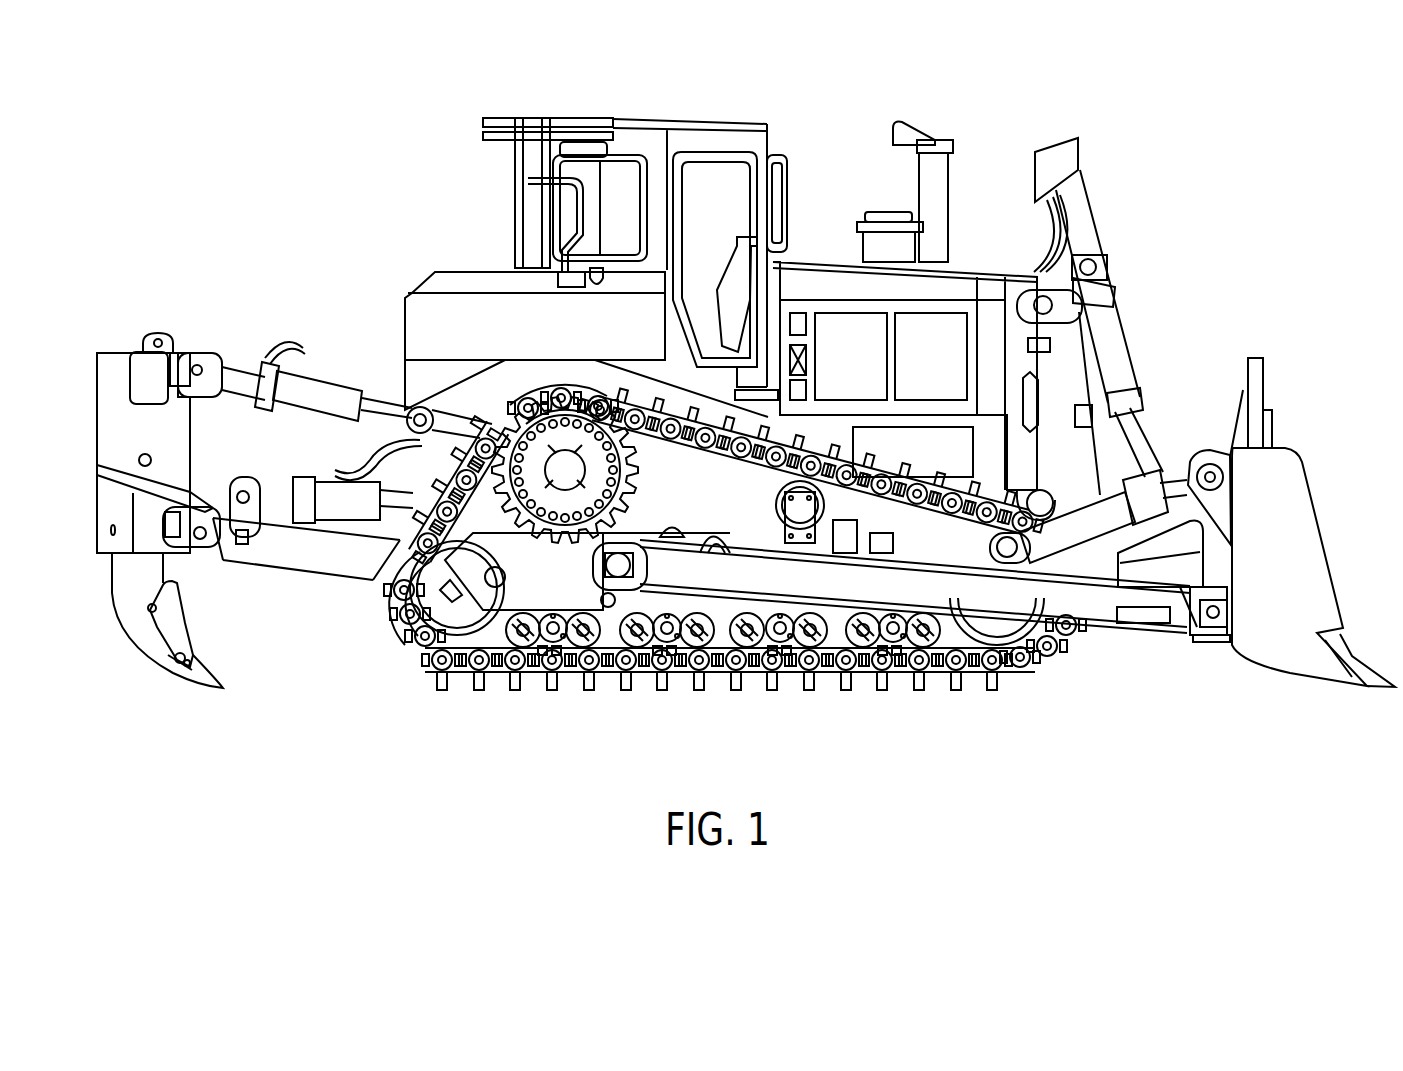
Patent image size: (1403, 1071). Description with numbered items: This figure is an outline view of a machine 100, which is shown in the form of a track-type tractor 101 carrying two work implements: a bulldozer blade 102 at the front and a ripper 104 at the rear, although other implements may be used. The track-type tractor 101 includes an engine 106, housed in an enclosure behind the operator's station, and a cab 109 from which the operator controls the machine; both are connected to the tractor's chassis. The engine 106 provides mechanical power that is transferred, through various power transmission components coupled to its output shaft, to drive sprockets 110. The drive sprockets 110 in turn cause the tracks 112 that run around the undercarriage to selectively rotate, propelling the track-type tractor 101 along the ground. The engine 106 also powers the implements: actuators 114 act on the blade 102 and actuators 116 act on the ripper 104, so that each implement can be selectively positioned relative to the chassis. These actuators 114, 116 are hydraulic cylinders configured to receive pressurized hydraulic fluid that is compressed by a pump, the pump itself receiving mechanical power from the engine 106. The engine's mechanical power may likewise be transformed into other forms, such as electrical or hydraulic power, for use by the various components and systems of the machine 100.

The machine 100 is at (1283, 308).
The track-type tractor 101 is at (437, 280).
The bulldozer blade 102 is at (1300, 512).
The ripper 104 is at (110, 420).
The engine 106 is at (945, 328).
The cab 109 is at (722, 180).
The drive sprockets 110 is at (565, 470).
The tracks 112 is at (398, 635).
The actuators 114 is at (1112, 340).
The actuators 116 is at (318, 398).